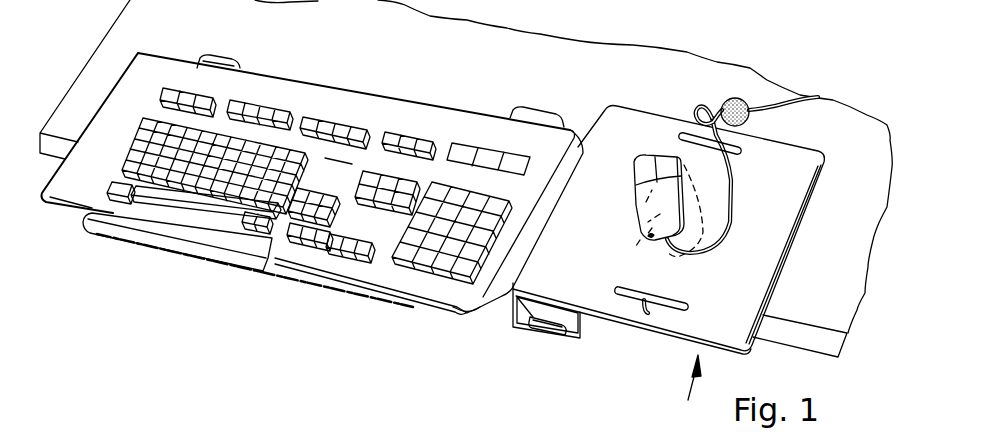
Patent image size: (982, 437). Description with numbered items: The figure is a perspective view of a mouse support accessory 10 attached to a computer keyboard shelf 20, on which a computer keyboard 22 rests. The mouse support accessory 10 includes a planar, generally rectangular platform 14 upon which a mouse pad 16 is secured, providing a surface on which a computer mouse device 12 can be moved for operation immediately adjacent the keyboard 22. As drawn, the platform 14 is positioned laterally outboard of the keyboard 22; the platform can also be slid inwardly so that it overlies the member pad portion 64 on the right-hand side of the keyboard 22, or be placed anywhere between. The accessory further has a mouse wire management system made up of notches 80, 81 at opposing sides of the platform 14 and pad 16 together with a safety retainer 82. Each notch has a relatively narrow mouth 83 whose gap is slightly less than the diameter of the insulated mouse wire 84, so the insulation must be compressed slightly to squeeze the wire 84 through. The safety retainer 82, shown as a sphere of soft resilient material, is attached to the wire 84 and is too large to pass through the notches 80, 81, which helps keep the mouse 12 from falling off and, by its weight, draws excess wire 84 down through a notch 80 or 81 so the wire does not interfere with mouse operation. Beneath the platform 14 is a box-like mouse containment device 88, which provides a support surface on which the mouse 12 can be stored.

The mouse support accessory 10 is at (688, 388).
The computer mouse device 12 is at (650, 232).
The platform 14 is at (607, 320).
The mouse pad 16 is at (765, 262).
The keyboard shelf 20 is at (417, 303).
The computer keyboard 22 is at (270, 238).
The member pad portion 64 is at (480, 258).
The notch 80 is at (672, 306).
The notch 81 is at (736, 155).
The safety retainer 82 is at (743, 97).
The mouth 83 is at (719, 109).
The insulated mouse wire 84 is at (733, 207).
The mouse containment device 88 is at (568, 334).